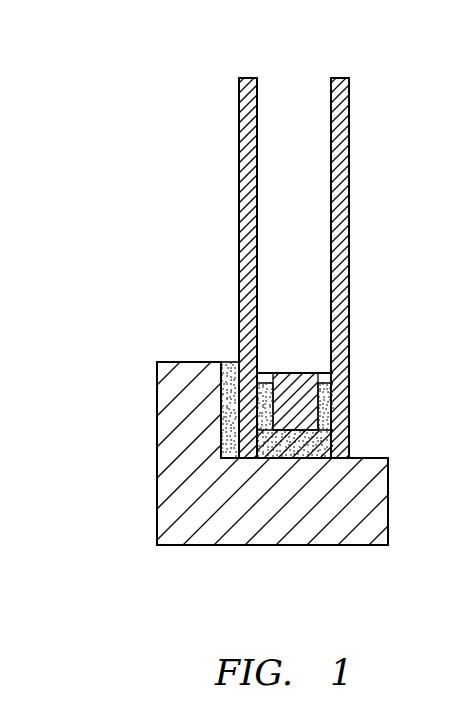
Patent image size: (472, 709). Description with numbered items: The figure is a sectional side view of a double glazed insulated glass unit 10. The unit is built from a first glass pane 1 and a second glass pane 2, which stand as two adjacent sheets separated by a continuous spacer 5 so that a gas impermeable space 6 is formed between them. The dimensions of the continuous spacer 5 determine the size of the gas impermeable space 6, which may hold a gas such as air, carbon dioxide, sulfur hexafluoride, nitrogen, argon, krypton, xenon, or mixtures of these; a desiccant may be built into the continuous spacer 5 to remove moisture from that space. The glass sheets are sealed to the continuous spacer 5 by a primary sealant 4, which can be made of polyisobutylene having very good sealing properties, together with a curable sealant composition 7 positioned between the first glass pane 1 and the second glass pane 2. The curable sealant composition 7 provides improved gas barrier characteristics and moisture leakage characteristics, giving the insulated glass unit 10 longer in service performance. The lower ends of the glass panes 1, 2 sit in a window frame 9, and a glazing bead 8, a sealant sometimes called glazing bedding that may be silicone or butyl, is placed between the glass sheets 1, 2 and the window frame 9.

The insulated glass unit 10 is at (124, 150).
The first glass pane 1 is at (240, 173).
The second glass pane 2 is at (345, 162).
The gas impermeable space 6 is at (288, 127).
The window frame 9 is at (170, 452).
The glazing bead 8 is at (232, 362).
The primary sealant 4 is at (340, 374).
The continuous spacer 5 is at (301, 373).
The curable sealant composition 7 is at (350, 437).